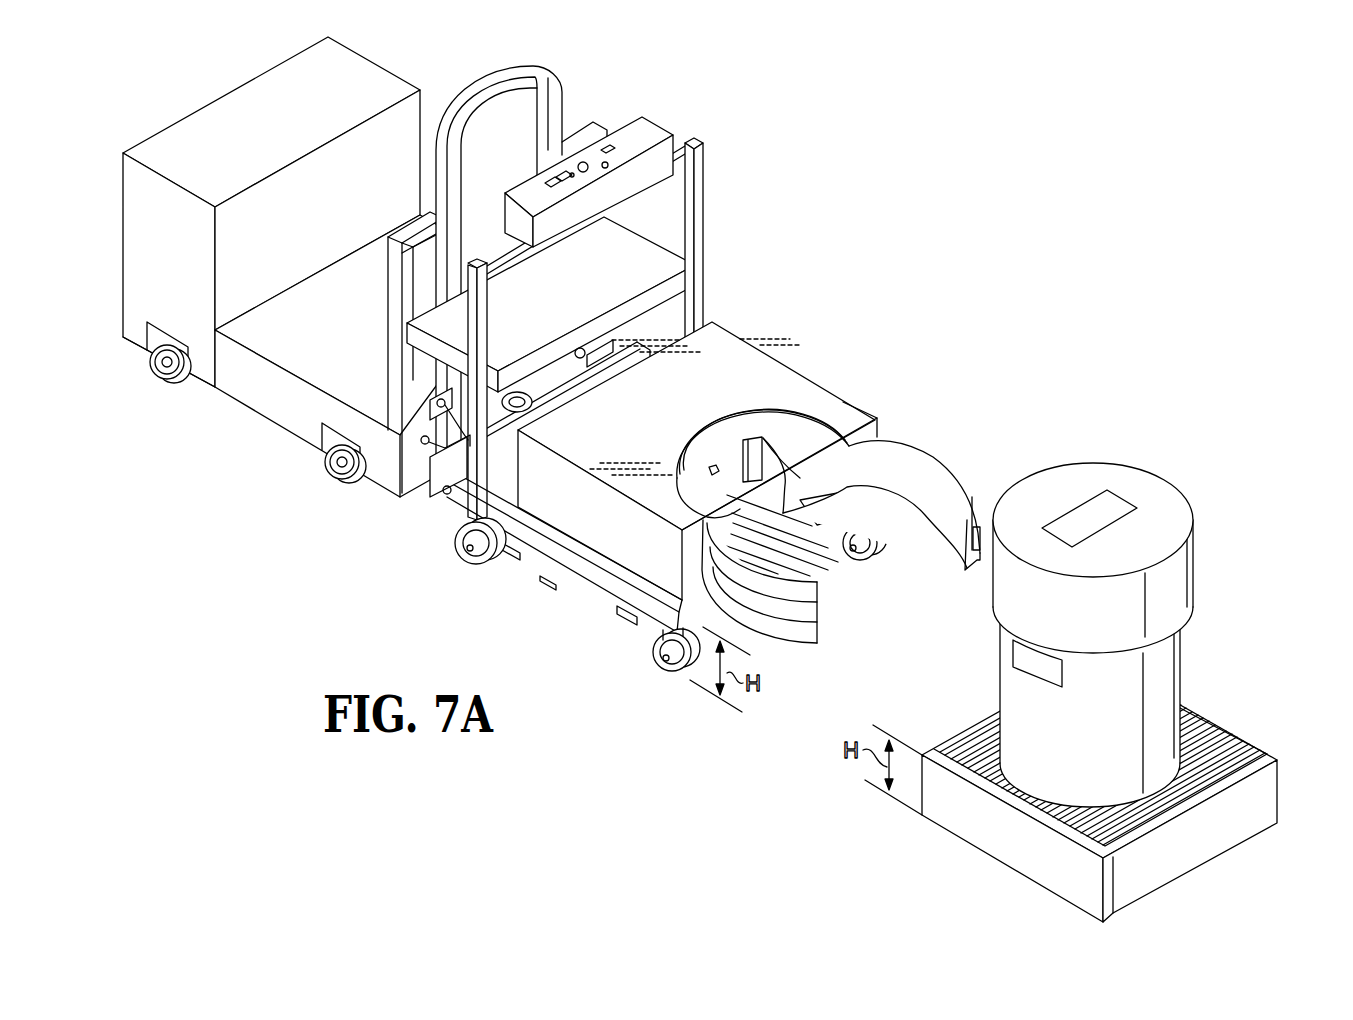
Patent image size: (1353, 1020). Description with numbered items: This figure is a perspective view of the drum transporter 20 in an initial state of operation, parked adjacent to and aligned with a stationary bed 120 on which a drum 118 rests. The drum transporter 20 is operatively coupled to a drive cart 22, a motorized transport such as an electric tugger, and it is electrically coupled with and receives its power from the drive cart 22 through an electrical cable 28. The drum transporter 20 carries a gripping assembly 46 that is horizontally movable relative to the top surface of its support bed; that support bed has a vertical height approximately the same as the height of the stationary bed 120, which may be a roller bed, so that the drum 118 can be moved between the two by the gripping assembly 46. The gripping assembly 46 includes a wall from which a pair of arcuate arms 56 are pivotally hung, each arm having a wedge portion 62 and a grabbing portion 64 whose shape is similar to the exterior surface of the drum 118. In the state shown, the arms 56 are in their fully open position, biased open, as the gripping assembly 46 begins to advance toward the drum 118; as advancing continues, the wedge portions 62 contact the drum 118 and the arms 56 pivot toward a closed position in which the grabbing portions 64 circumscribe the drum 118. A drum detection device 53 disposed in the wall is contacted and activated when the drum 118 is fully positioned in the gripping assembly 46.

The drum transporter 20 is at (813, 203).
The drive cart 22 is at (347, 80).
The electrical cable 28 is at (432, 420).
The gripping assembly 46 is at (811, 320).
The drum detection device 53 is at (714, 465).
The arms 56 is at (933, 465).
The wedge portion 62 is at (800, 450).
The grabbing portion 64 is at (953, 488).
The drum 118 is at (1168, 687).
The stationary bed 120 is at (1197, 847).